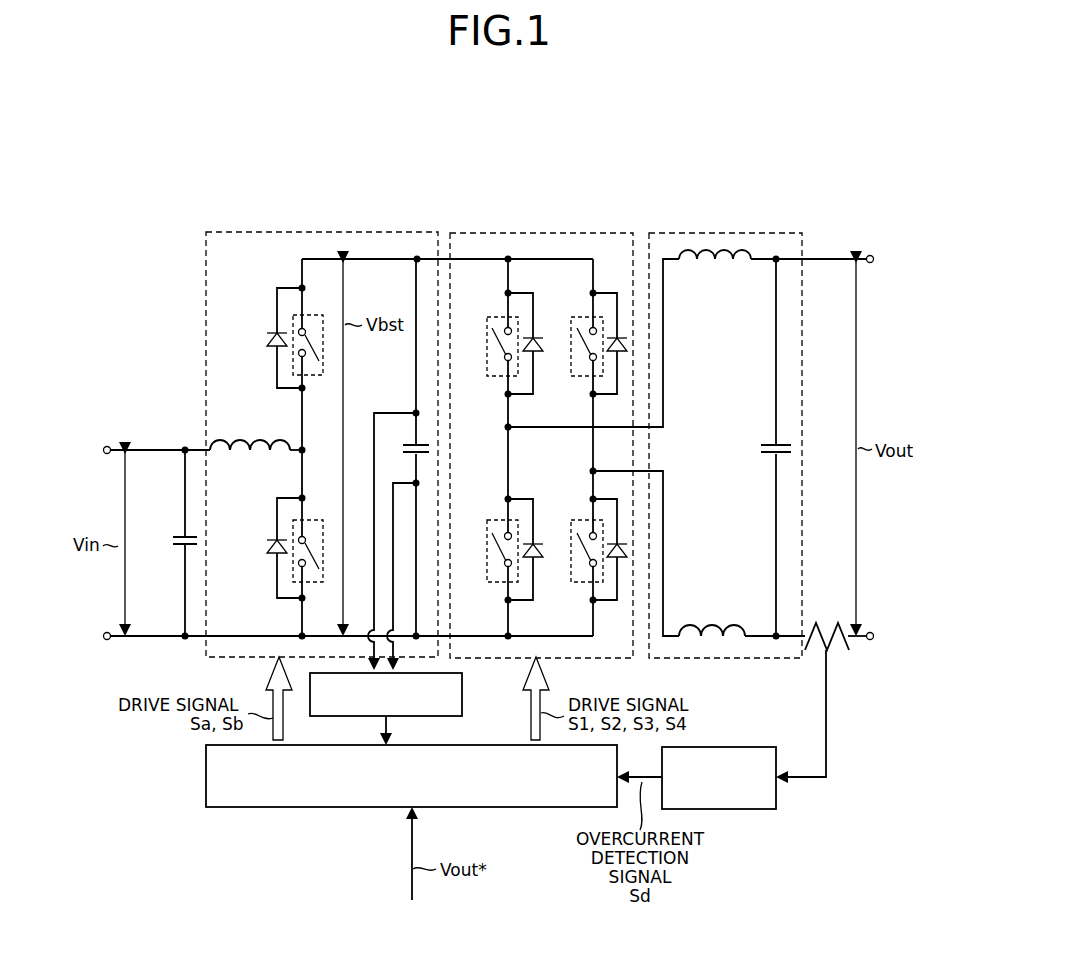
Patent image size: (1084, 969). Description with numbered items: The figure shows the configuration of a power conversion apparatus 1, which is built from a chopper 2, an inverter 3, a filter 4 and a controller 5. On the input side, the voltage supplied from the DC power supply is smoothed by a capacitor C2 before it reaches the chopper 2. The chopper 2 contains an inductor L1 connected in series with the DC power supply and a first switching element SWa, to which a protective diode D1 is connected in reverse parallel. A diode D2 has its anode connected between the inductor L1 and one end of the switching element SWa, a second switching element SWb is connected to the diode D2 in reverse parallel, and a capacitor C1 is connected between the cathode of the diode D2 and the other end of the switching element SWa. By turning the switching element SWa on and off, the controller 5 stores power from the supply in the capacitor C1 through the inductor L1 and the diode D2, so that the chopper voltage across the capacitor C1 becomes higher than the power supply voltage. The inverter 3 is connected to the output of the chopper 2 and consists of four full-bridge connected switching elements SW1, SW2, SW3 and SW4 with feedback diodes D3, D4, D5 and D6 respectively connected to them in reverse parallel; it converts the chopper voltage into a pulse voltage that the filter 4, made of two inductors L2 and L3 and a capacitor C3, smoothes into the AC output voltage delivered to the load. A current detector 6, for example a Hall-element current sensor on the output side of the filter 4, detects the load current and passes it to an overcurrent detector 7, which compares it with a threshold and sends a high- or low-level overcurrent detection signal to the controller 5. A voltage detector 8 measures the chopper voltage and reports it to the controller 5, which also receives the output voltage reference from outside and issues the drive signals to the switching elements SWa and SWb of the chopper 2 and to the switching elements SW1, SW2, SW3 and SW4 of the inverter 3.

The power conversion apparatus 1 is at (556, 165).
The chopper 2 is at (239, 232).
The inverter 3 is at (484, 233).
The filter 4 is at (682, 233).
The controller 5 is at (491, 746).
The current detector 6 is at (829, 622).
The overcurrent detector 7 is at (736, 747).
The voltage detector 8 is at (463, 693).
The inductor L1 is at (248, 442).
The inductor L2 is at (721, 250).
The inductor L3 is at (720, 624).
The capacitor C1 is at (428, 445).
The capacitor C2 is at (178, 537).
The capacitor C3 is at (764, 445).
The protective diode D1 is at (267, 546).
The diode D2 is at (267, 336).
The feedback diode D3 is at (538, 345).
The feedback diode D4 is at (538, 552).
The feedback diode D5 is at (623, 343).
The feedback diode D6 is at (623, 548).
The switching element SWa is at (293, 571).
The switching element SWb is at (293, 364).
The switching element SW1 is at (493, 317).
The switching element SW2 is at (493, 520).
The switching element SW3 is at (578, 317).
The switching element SW4 is at (578, 520).